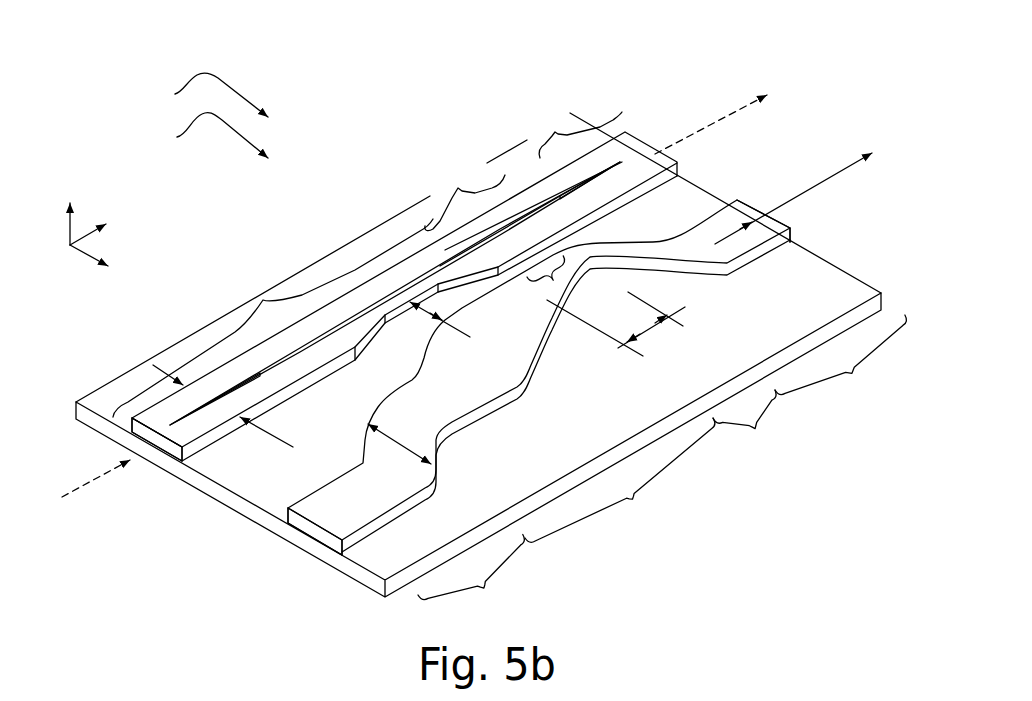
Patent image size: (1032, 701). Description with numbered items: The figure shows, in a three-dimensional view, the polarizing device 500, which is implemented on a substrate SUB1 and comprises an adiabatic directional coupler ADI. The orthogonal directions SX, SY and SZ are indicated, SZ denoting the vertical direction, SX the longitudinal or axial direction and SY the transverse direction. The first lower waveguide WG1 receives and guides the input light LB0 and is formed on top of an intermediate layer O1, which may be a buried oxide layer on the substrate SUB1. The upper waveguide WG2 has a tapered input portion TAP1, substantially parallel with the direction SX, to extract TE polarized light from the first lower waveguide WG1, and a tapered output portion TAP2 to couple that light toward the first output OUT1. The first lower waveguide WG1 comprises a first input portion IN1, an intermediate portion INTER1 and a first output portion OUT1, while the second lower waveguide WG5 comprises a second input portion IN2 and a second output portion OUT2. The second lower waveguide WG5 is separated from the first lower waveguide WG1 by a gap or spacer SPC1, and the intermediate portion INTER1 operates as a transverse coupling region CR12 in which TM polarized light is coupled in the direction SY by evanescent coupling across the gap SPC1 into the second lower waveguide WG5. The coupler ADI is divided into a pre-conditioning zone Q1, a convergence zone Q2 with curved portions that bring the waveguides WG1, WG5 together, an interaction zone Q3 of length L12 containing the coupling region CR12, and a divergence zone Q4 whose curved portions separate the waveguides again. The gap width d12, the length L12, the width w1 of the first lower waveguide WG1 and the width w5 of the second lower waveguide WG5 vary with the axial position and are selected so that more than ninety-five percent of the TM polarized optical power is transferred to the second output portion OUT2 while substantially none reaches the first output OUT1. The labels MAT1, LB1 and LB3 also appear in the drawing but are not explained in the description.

The polarizing device 500 is at (201, 95).
The adiabatic directional coupler ADI is at (202, 135).
The vertical direction SZ is at (69, 209).
The longitudinal direction SX is at (106, 226).
The transverse direction SY is at (108, 264).
The substrate SUB1 is at (233, 500).
The first lower waveguide WG1 is at (147, 417).
The upper waveguide WG2 is at (383, 297).
The second lower waveguide WG5 is at (700, 217).
The tapered input portion TAP1 is at (218, 390).
The tapered output portion TAP2 is at (582, 178).
The transverse coupling region CR12 is at (522, 210).
The first input portion IN1 is at (273, 318).
The intermediate portion INTER1 is at (452, 200).
The first output portion OUT1 is at (567, 134).
The second input portion IN2 is at (307, 528).
The second output portion OUT2 is at (740, 198).
The intermediate layer O1 is at (200, 478).
The first material MAT1 is at (359, 273).
The gap or spacer SPC1 is at (628, 292).
The length of the interaction zone L12 is at (616, 324).
The gap width d12 is at (464, 319).
The width of the first lower waveguide w1 is at (283, 428).
The width of the second lower waveguide w5 is at (404, 433).
The input light LB0 is at (62, 505).
The TM light beam LB1 is at (727, 263).
The TE light beam LB3 is at (745, 100).
The pre-conditioning zone Q1 is at (477, 577).
The convergence zone Q2 is at (626, 488).
The interaction zone Q3 is at (750, 424).
The divergence zone Q4 is at (846, 363).